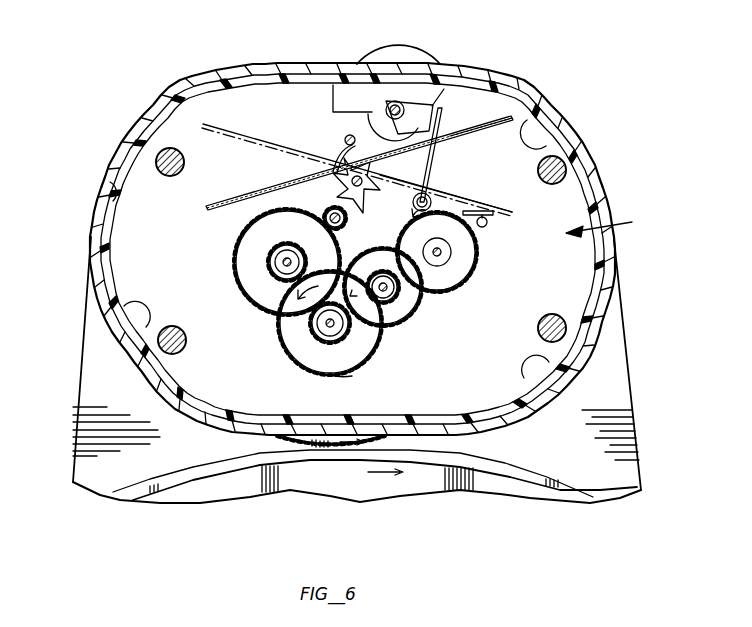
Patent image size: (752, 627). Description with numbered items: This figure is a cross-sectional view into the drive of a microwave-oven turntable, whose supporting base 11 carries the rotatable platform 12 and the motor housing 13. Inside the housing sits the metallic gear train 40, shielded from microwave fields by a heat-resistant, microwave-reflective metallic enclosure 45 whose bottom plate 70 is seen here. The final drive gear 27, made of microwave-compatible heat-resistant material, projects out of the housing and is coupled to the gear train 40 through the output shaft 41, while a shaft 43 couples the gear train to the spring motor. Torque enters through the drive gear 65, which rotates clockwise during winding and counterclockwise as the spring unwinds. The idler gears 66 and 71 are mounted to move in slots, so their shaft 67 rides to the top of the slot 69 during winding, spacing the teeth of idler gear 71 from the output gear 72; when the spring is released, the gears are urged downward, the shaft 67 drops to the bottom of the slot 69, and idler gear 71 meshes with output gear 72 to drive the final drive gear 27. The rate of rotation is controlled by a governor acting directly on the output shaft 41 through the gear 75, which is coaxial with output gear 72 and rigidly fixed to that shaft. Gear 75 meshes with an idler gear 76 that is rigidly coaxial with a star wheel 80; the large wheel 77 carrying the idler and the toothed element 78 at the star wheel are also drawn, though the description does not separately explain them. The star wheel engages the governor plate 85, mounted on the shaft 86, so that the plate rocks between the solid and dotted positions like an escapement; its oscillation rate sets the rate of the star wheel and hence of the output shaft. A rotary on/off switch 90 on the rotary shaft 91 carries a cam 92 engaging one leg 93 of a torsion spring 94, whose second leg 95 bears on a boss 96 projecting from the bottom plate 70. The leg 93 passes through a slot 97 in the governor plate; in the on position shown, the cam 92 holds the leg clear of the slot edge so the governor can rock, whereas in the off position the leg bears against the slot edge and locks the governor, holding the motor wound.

The supporting base 11 is at (78, 375).
The rotatable platform 12 is at (523, 493).
The motor housing 13 is at (152, 120).
The final drive gear 27 is at (336, 447).
The gear train 40 is at (614, 219).
The shaft 41 is at (316, 322).
The shaft 43 is at (445, 254).
The metallic enclosure 45 is at (592, 160).
The drive gear 65 is at (470, 280).
The idler gear 66 is at (388, 305).
The shaft 67 is at (397, 290).
The slot 69 is at (370, 262).
The bottom plate 70 is at (503, 398).
The idler gear 71 is at (418, 298).
The output gear 72 is at (313, 335).
The gear 75 is at (352, 376).
The idler gear 76 is at (268, 262).
The gear 77 is at (238, 274).
The star wheel 78 is at (330, 186).
The star wheel 80 is at (370, 183).
The governor plate 85 is at (247, 197).
The shaft 86 is at (347, 137).
The rotary on/off switch 90 is at (358, 57).
The rotary shaft 91 is at (395, 101).
The cam 92 is at (421, 117).
The leg 93 is at (428, 143).
The torsion spring 94 is at (430, 181).
The second leg 95 is at (496, 214).
The boss 96 is at (488, 226).
The slot 97 is at (440, 128).